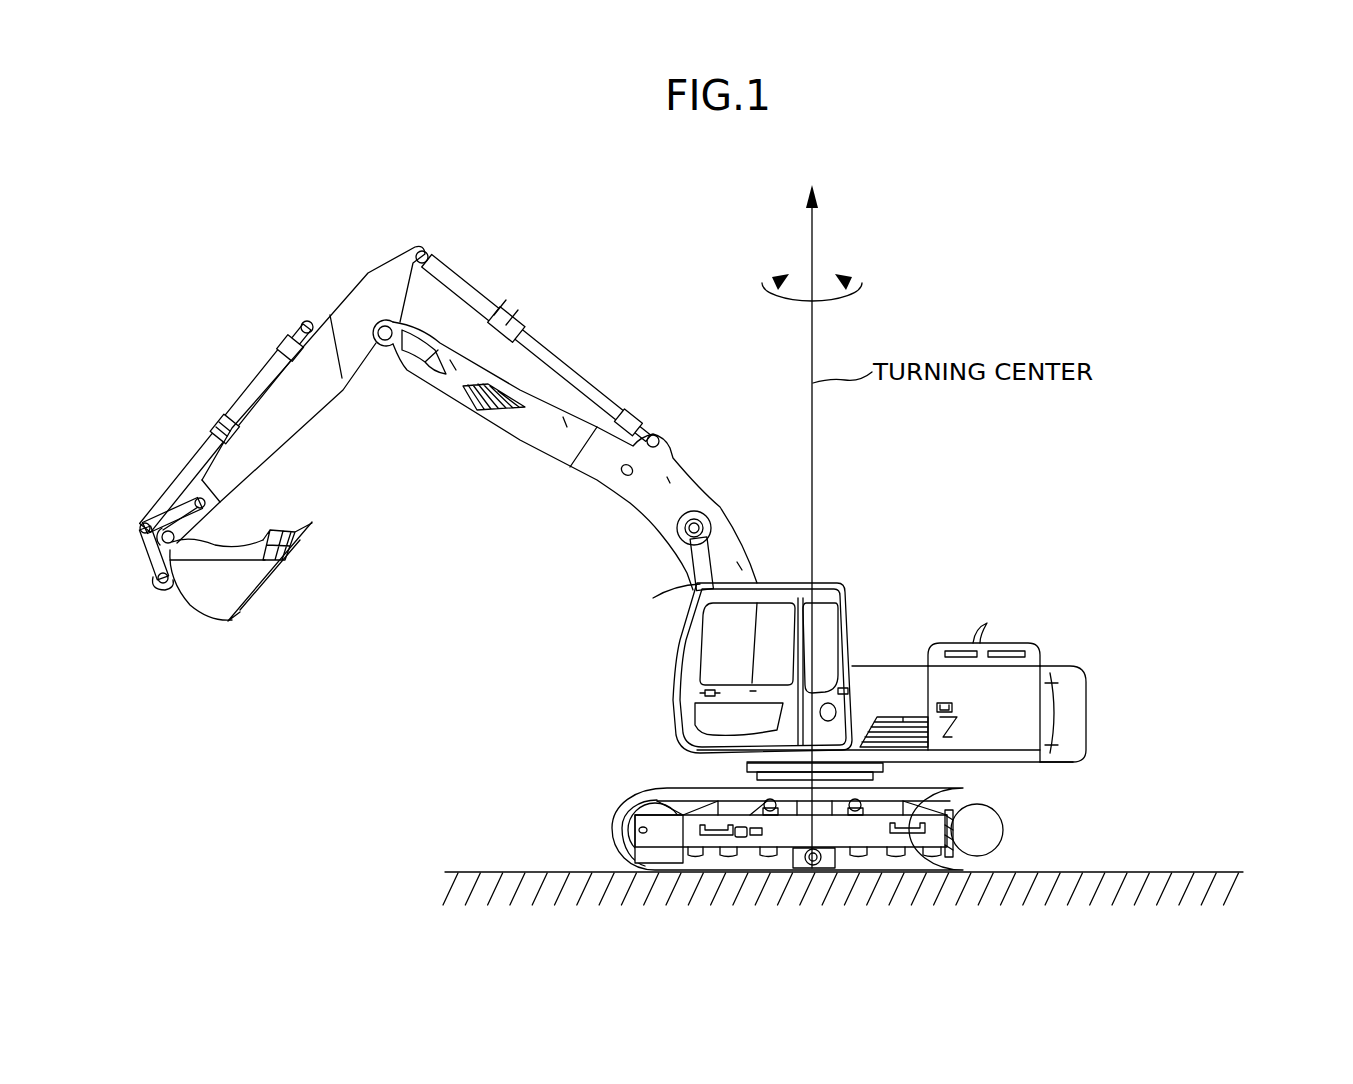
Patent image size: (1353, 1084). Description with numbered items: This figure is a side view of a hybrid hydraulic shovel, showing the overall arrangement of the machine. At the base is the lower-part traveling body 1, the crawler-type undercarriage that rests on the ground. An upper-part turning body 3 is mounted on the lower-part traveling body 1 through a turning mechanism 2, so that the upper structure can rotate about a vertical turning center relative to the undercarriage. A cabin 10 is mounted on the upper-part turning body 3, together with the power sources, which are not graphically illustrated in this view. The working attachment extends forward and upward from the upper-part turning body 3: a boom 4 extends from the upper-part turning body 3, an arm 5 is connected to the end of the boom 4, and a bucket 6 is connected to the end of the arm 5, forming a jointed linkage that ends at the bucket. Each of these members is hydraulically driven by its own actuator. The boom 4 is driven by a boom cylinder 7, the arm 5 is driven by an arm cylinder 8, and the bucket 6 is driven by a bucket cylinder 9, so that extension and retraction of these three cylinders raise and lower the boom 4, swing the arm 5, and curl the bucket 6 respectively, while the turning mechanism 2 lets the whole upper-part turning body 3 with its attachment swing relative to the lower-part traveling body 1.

The lower-part traveling body 1 is at (612, 828).
The turning mechanism 2 is at (873, 775).
The upper-part turning body 3 is at (893, 666).
The boom 4 is at (607, 483).
The arm 5 is at (312, 403).
The bucket 6 is at (223, 614).
The boom cylinder 7 is at (705, 562).
The arm cylinder 8 is at (593, 390).
The bucket cylinder 9 is at (255, 390).
The cabin 10 is at (832, 573).